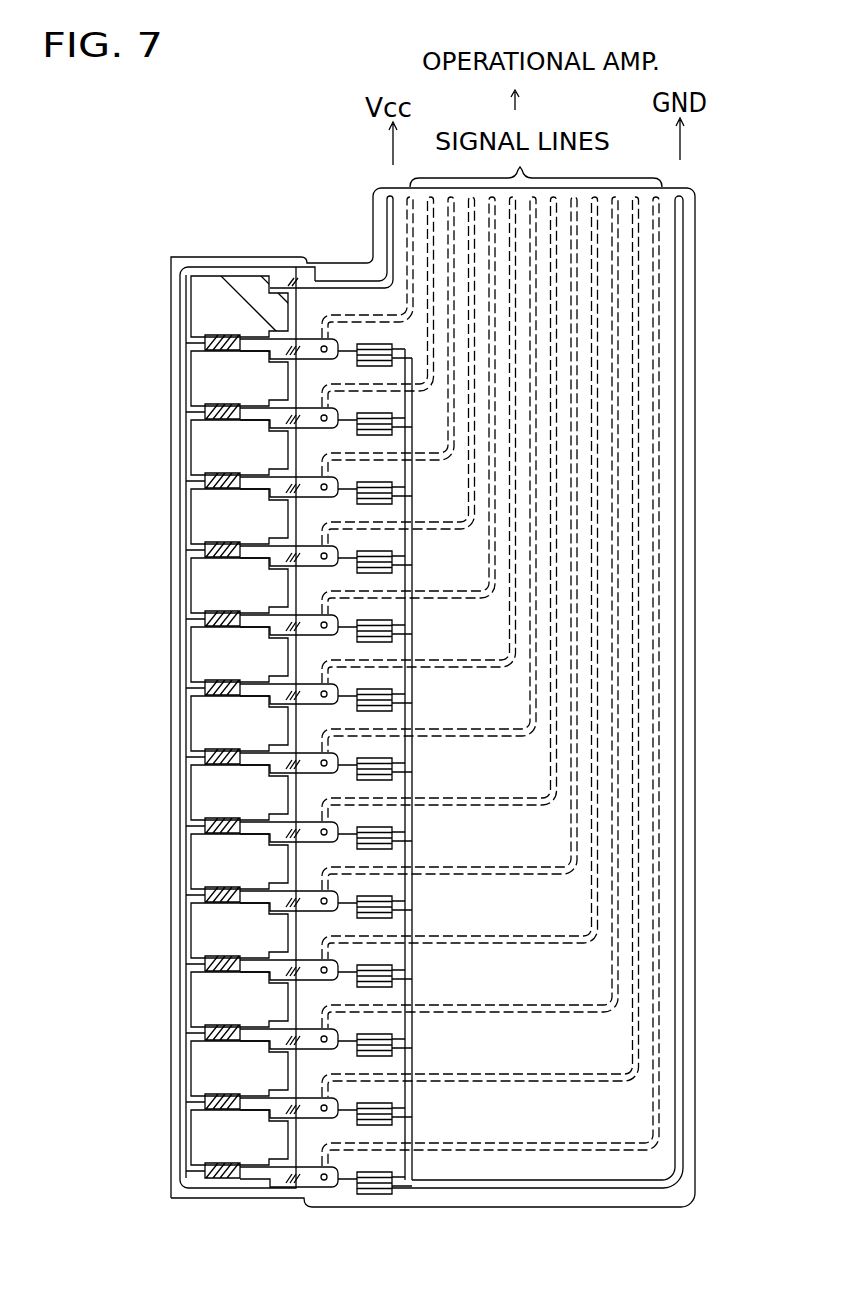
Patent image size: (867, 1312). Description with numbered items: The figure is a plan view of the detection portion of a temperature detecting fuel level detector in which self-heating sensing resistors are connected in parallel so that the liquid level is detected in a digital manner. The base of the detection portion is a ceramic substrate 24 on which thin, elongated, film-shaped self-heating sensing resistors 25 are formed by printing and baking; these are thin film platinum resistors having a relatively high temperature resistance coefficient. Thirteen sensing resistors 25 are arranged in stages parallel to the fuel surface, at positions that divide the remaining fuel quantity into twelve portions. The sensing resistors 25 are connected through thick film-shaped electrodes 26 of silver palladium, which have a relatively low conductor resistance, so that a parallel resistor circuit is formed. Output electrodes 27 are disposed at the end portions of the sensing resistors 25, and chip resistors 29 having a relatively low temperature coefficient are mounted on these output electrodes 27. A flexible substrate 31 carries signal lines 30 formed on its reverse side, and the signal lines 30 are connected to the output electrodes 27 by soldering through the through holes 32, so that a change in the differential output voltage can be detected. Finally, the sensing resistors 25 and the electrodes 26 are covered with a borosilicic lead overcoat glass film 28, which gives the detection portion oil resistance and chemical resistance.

The ceramic substrate 24 is at (175, 257).
The self-heating sensing resistor 25 is at (188, 322).
The electrode 26 is at (200, 470).
The output electrode 27 is at (293, 1168).
The overcoat glass film 28 is at (198, 922).
The chip resistor 29 is at (368, 1196).
The signal line 30 is at (618, 453).
The flexible substrate 31 is at (684, 1110).
The through hole 32 is at (322, 1182).